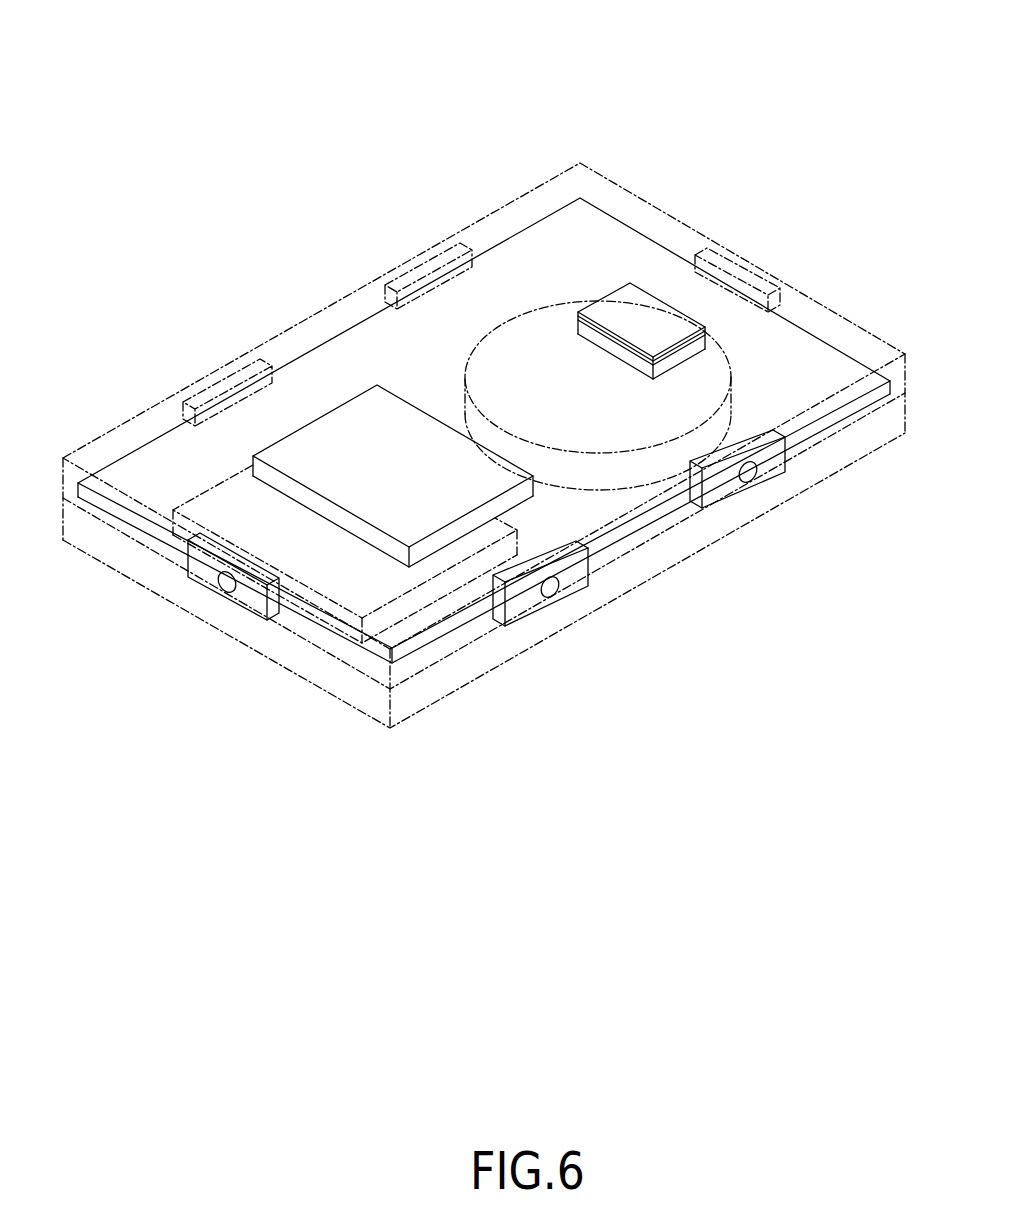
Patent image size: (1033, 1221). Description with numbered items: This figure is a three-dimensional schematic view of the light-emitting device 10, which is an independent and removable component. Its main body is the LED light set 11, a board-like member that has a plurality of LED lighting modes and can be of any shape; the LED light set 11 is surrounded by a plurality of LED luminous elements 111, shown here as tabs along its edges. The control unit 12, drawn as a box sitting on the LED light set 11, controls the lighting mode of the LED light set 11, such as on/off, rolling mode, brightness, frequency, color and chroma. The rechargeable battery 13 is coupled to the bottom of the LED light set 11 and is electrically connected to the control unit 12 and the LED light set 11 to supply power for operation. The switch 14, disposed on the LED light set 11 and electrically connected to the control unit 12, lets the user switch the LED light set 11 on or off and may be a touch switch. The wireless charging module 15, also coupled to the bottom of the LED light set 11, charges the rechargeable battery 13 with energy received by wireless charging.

The light-emitting device 10 is at (518, 150).
The LED light set 11 is at (927, 588).
The LED luminous elements 111 is at (247, 610).
The control unit 12 is at (365, 417).
The rechargeable battery 13 is at (232, 503).
The switch 14 is at (662, 313).
The wireless charging module 15 is at (500, 363).